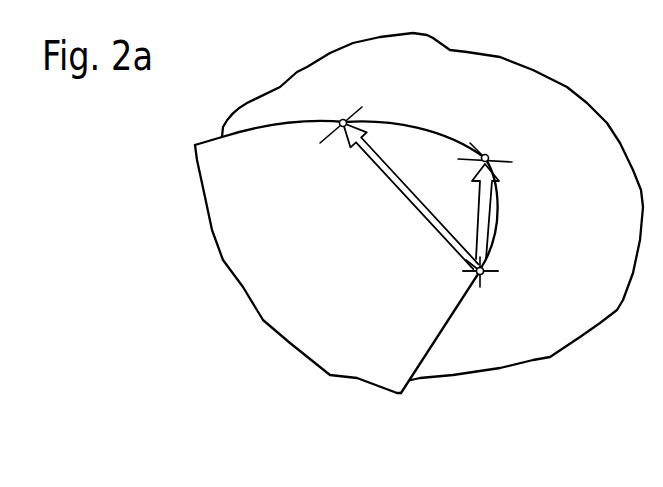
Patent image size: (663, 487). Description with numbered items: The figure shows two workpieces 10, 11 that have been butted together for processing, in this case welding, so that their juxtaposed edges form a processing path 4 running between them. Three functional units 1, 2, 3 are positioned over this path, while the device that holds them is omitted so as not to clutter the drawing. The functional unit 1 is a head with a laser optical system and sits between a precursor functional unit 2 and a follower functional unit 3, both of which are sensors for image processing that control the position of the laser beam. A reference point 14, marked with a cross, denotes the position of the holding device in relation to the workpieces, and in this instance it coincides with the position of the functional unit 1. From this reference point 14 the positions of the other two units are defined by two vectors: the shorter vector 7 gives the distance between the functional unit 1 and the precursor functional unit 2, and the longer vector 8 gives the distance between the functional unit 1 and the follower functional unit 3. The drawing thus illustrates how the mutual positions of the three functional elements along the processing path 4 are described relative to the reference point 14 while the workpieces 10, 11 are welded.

The functional unit 1 is at (485, 273).
The reference point 14 is at (485, 273).
The precursor functional unit 2 is at (485, 158).
The follower functional unit 3 is at (343, 123).
The processing path 4 is at (437, 350).
The shorter vector 7 is at (489, 203).
The longer vector 8 is at (409, 193).
The workpiece 10 is at (404, 317).
The workpiece 11 is at (493, 355).